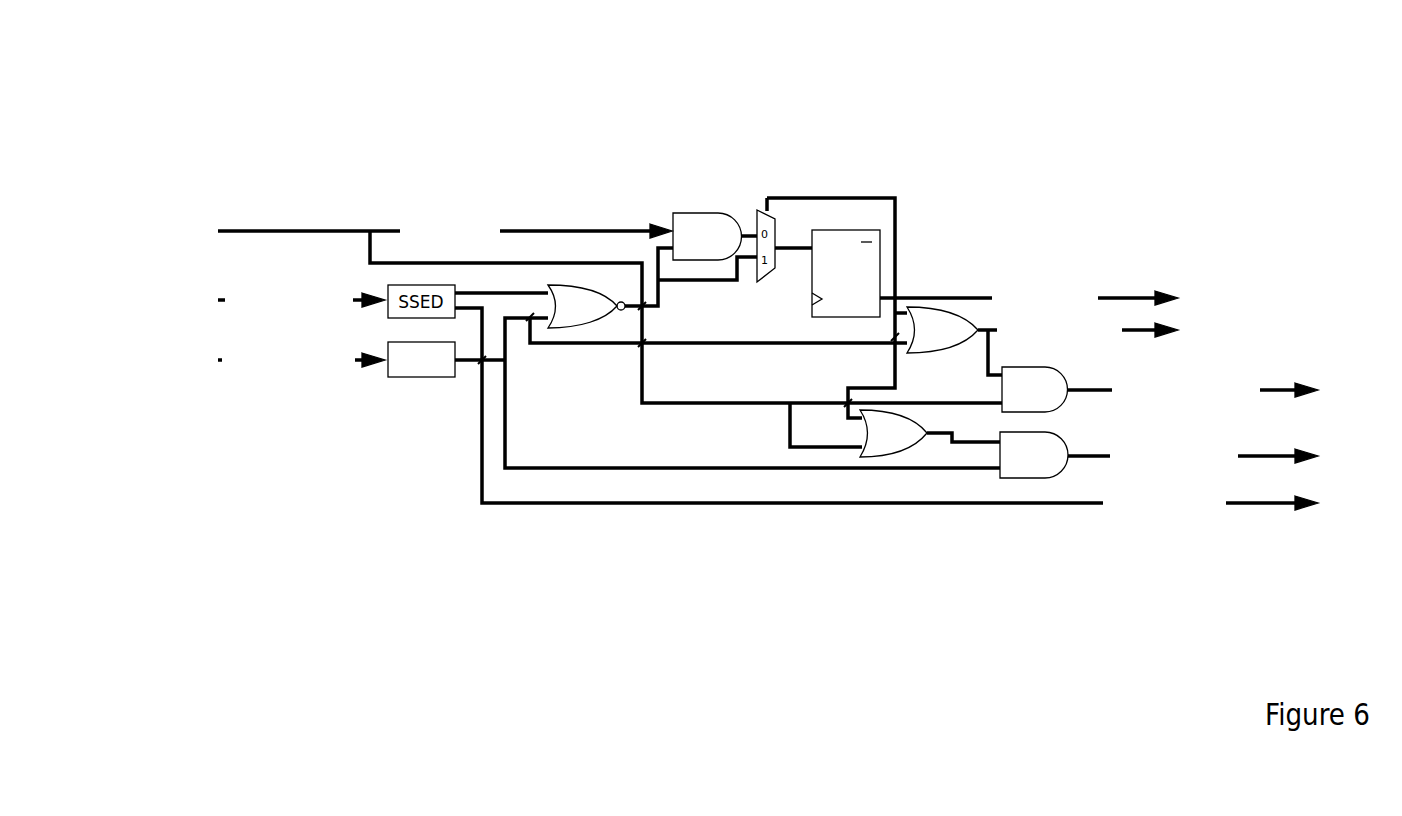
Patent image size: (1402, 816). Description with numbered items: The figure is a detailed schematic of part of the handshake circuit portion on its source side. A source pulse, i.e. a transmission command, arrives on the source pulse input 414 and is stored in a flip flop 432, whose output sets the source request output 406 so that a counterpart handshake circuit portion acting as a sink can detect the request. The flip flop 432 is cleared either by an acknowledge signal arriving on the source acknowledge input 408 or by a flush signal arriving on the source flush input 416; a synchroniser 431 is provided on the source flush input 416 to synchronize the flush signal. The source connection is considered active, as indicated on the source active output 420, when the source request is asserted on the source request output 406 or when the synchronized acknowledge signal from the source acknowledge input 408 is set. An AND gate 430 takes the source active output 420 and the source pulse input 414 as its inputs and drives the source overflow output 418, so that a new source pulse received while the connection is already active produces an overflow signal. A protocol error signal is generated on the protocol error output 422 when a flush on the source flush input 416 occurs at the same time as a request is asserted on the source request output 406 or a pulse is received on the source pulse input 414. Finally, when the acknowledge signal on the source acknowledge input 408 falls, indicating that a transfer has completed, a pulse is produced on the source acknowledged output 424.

The source pulse input 414 is at (437, 223).
The source acknowledge input 408 is at (242, 283).
The source flush input 416 is at (242, 370).
The synchroniser 431 is at (405, 378).
The flip flop 432 is at (840, 242).
The AND gate 430 is at (1037, 382).
The source request output 406 is at (1082, 293).
The source active output 420 is at (1107, 320).
The source overflow output 418 is at (1210, 382).
The protocol error output 422 is at (1212, 450).
The source acknowledged output 424 is at (1195, 510).